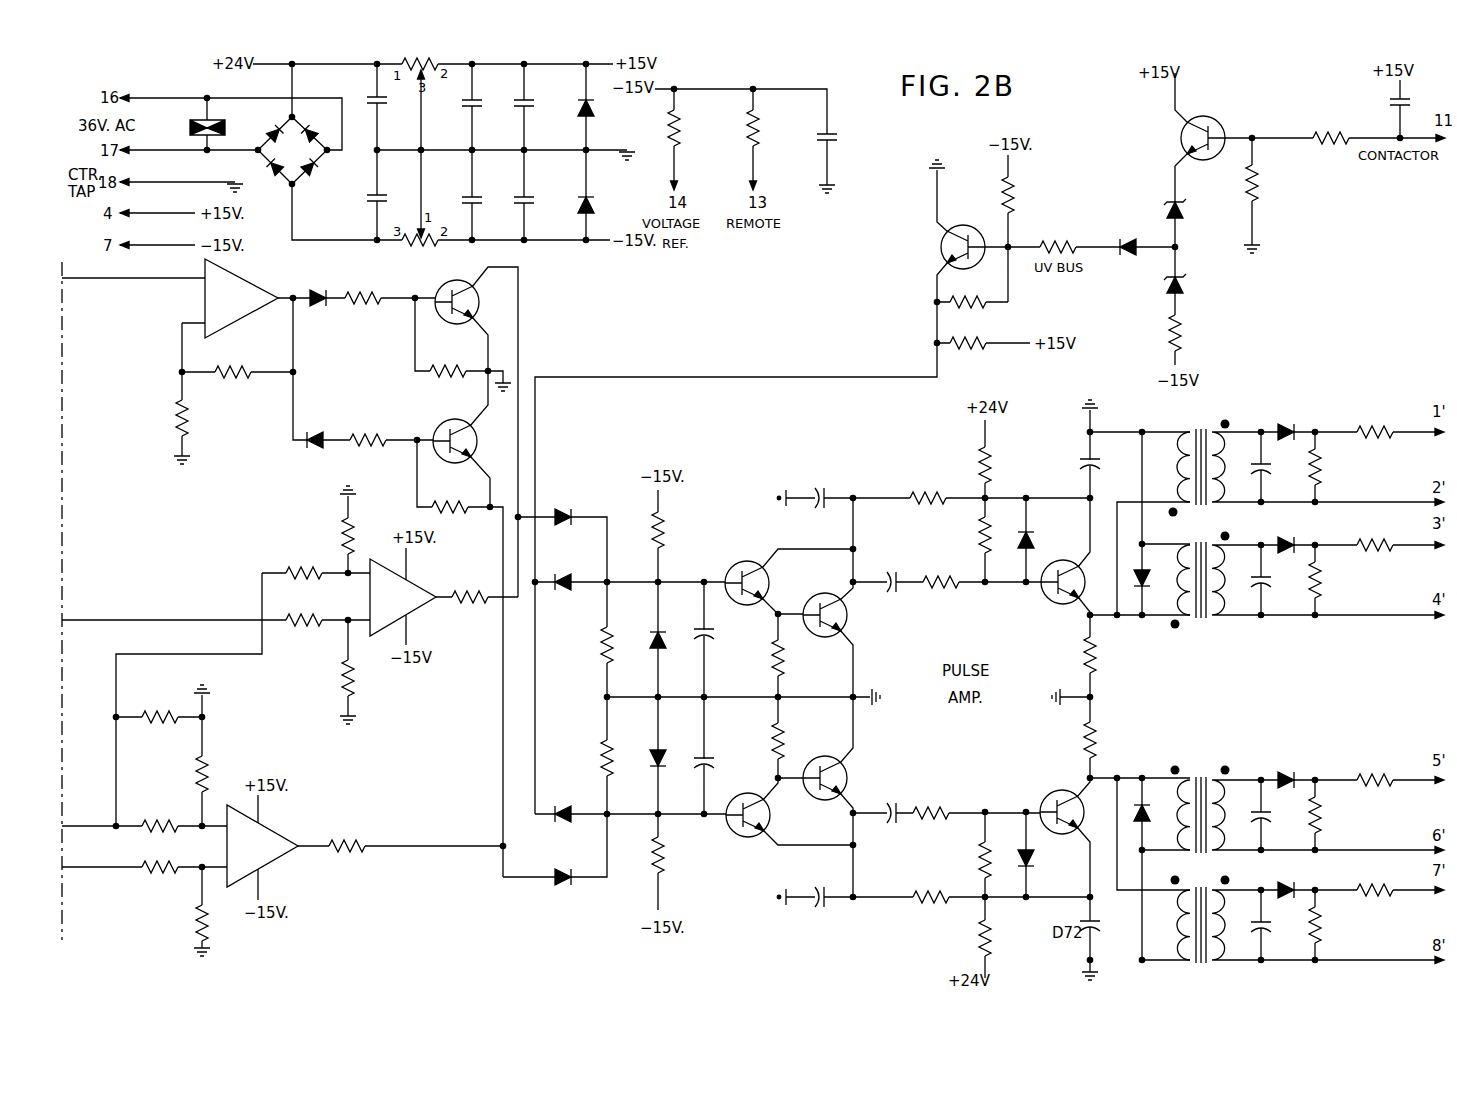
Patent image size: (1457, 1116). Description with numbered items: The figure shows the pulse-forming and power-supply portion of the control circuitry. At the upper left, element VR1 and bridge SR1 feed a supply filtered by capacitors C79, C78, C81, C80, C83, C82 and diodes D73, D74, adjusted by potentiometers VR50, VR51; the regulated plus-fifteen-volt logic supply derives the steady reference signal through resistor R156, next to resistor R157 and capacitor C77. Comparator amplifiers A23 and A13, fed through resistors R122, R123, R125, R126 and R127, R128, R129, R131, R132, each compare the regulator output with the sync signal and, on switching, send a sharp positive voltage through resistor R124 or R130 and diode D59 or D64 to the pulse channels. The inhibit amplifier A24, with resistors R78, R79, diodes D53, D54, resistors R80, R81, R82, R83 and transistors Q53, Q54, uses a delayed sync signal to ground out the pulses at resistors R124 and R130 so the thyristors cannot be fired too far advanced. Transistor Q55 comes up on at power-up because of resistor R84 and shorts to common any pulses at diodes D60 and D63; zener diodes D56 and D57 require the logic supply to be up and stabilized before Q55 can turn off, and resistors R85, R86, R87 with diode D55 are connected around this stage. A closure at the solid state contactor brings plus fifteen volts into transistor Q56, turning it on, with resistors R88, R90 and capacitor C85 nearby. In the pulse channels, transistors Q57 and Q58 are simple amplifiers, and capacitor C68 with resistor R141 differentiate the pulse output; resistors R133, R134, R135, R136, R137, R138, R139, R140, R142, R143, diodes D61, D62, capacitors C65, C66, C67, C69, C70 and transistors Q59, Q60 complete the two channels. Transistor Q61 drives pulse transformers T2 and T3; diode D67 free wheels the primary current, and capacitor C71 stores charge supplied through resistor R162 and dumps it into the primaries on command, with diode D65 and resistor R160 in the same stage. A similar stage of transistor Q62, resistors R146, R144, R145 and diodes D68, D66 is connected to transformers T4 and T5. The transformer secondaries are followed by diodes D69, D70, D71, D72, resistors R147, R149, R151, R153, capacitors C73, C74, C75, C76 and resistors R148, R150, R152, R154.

The varistor VR1 is at (217, 119).
The bridge rectifier SR1 is at (292, 150).
The potentiometer VR50 is at (436, 55).
The potentiometer VR51 is at (435, 250).
The capacitor C79 is at (389, 113).
The capacitor C78 is at (389, 195).
The capacitor C81 is at (484, 117).
The capacitor C80 is at (484, 191).
The capacitor C83 is at (536, 117).
The capacitor C82 is at (536, 191).
The diode D73 is at (572, 100).
The diode D74 is at (603, 206).
The resistor R156 is at (694, 128).
The resistor R157 is at (773, 128).
The capacitor C77 is at (841, 140).
The transistor Q55 is at (952, 247).
The resistor R84 is at (1025, 195).
The resistor R85 is at (1058, 234).
The diode D55 is at (1137, 237).
The zener diode D56 is at (1155, 200).
The zener diode D57 is at (1192, 281).
The resistor R86 is at (968, 290).
The resistor R87 is at (968, 331).
The transistor Q56 is at (1220, 134).
The resistor R88 is at (1269, 183).
The resistor R90 is at (1331, 125).
The capacitor C85 is at (1387, 101).
The inhibit amplifier A24 is at (241, 306).
The resistor R78 is at (235, 382).
The resistor R79 is at (199, 418).
The diode D53 is at (322, 287).
The resistor R80 is at (363, 286).
The transistor Q53 is at (474, 302).
The resistor R82 is at (448, 359).
The diode D54 is at (322, 429).
The resistor R81 is at (368, 426).
The transistor Q54 is at (473, 441).
The resistor R83 is at (450, 495).
The diode D59 is at (568, 507).
The diode D60 is at (570, 571).
The resistor R122 is at (330, 536).
The resistor R123 is at (296, 561).
The resistor R125 is at (307, 609).
The resistor R126 is at (328, 678).
The comparator amplifier A23 is at (449, 598).
The resistor R124 is at (473, 584).
The resistor R127 is at (158, 705).
The resistor R128 is at (222, 774).
The resistor R129 is at (158, 814).
The resistor R131 is at (158, 856).
The resistor R132 is at (178, 923).
The comparator amplifier A13 is at (294, 846).
The resistor R130 is at (349, 834).
The resistor R133 is at (679, 530).
The resistor R134 is at (588, 645).
The diode D61 is at (674, 644).
The capacitor C65 is at (719, 643).
The transistor Q57 is at (762, 583).
The transistor Q58 is at (840, 615).
The resistor R137 is at (799, 658).
The capacitor C67 is at (821, 486).
The capacitor C68 is at (893, 570).
The resistor R140 is at (938, 594).
The resistor R135 is at (587, 758).
The diode D63 is at (574, 803).
The diode D62 is at (675, 763).
The capacitor C66 is at (719, 767).
The resistor R136 is at (679, 855).
The diode D64 is at (576, 867).
The transistor Q60 is at (762, 815).
The resistor R138 is at (800, 740).
The transistor Q59 is at (840, 778).
The capacitor C69 is at (893, 800).
The resistor R142 is at (928, 824).
The capacitor C70 is at (825, 907).
The resistor R143 is at (926, 909).
The resistor R139 is at (929, 485).
The resistor R162 is at (1007, 465).
The resistor R141 is at (967, 535).
The diode D65 is at (1044, 533).
The transistor Q61 is at (1080, 582).
The capacitor C71 is at (1107, 462).
The diode D67 is at (1133, 567).
The resistor R160 is at (1112, 655).
The resistor R146 is at (1113, 740).
The pulse amplifier transistor Q62 is at (1079, 812).
The diode D68 is at (1155, 822).
The resistor R144 is at (967, 860).
The diode D66 is at (1044, 862).
The resistor R145 is at (1006, 938).
The pulse transformer T2 is at (1210, 458).
The pulse transformer T3 is at (1210, 571).
The pulse transformer T4 is at (1210, 801).
The pulse transformer T5 is at (1210, 911).
The diode D69 is at (1285, 421).
The resistor R147 is at (1373, 420).
The capacitor C73 is at (1275, 473).
The resistor R148 is at (1337, 467).
The diode D70 is at (1285, 533).
The resistor R149 is at (1373, 532).
The capacitor C74 is at (1275, 586).
The resistor R150 is at (1337, 580).
The diode D71 is at (1285, 768).
The resistor R151 is at (1373, 767).
The capacitor C75 is at (1275, 821).
The resistor R152 is at (1337, 815).
The diode D72 is at (1285, 878).
The resistor R153 is at (1373, 877).
The capacitor C76 is at (1275, 931).
The resistor R154 is at (1337, 925).